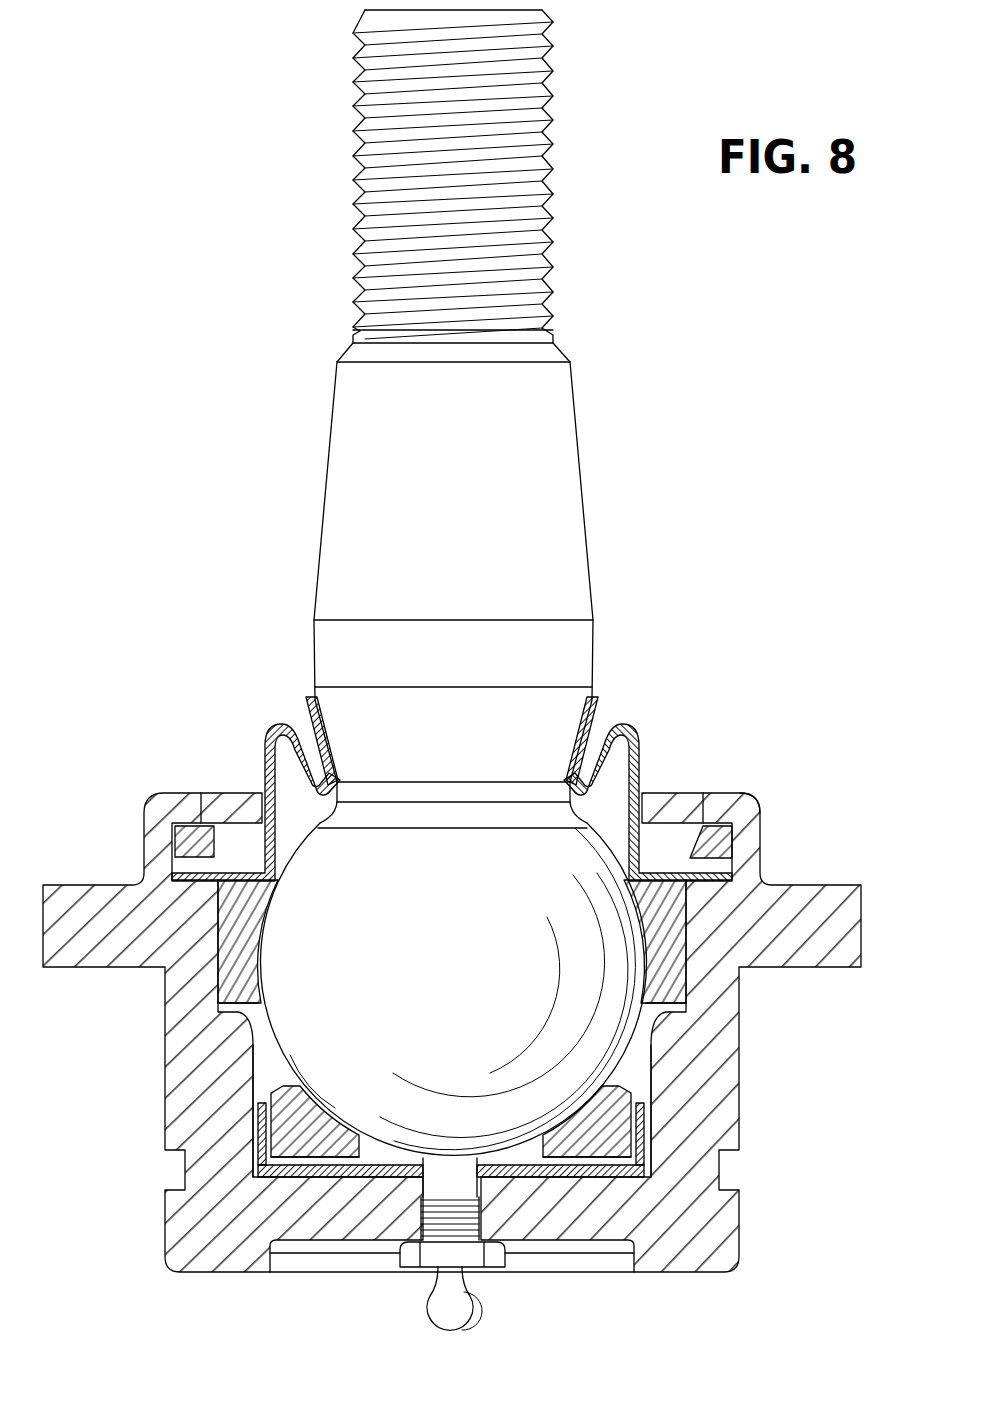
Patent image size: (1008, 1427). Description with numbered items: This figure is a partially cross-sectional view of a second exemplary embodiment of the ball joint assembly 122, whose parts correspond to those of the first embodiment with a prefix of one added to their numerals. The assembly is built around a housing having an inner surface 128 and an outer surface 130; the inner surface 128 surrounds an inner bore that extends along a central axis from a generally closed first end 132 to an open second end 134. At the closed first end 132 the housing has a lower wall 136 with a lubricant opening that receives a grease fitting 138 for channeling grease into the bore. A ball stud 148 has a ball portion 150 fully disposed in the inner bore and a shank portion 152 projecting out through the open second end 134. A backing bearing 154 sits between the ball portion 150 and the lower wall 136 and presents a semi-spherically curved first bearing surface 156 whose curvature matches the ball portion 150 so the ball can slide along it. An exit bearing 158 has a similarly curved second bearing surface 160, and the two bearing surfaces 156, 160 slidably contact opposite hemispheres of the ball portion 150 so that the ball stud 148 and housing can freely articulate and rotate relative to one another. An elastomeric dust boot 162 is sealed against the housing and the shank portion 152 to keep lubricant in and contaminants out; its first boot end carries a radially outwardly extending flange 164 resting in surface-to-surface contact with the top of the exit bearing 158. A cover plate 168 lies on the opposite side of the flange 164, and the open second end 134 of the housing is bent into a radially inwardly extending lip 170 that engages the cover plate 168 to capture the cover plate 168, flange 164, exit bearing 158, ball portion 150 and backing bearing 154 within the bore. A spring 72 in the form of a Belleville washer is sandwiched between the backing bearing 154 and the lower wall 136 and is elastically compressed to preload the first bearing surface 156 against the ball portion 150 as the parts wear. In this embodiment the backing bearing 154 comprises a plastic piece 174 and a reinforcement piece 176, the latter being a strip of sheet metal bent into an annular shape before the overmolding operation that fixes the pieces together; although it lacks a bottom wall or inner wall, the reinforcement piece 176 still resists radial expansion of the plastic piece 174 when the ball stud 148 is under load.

The spring 72 is at (348, 1176).
The ball joint assembly 122 is at (740, 532).
The inner surface 128 is at (262, 1075).
The outer surface 130 is at (167, 1060).
The closed first end 132 is at (600, 1180).
The open second end 134 is at (693, 790).
The lower wall 136 is at (317, 1222).
The grease fitting 138 is at (447, 1320).
The ball stud 148 is at (616, 426).
The ball portion 150 is at (469, 1007).
The shank portion 152 is at (358, 440).
The backing bearing 154 is at (658, 1137).
The first bearing surface 156 is at (330, 1105).
The exit bearing 158 is at (678, 930).
The second bearing surface 160 is at (262, 920).
The dust boot 162 is at (606, 740).
The flange 164 is at (237, 857).
The cover plate 168 is at (720, 845).
The lip 170 is at (736, 797).
The plastic piece 174 is at (263, 1127).
The reinforcement piece 176 is at (640, 1115).